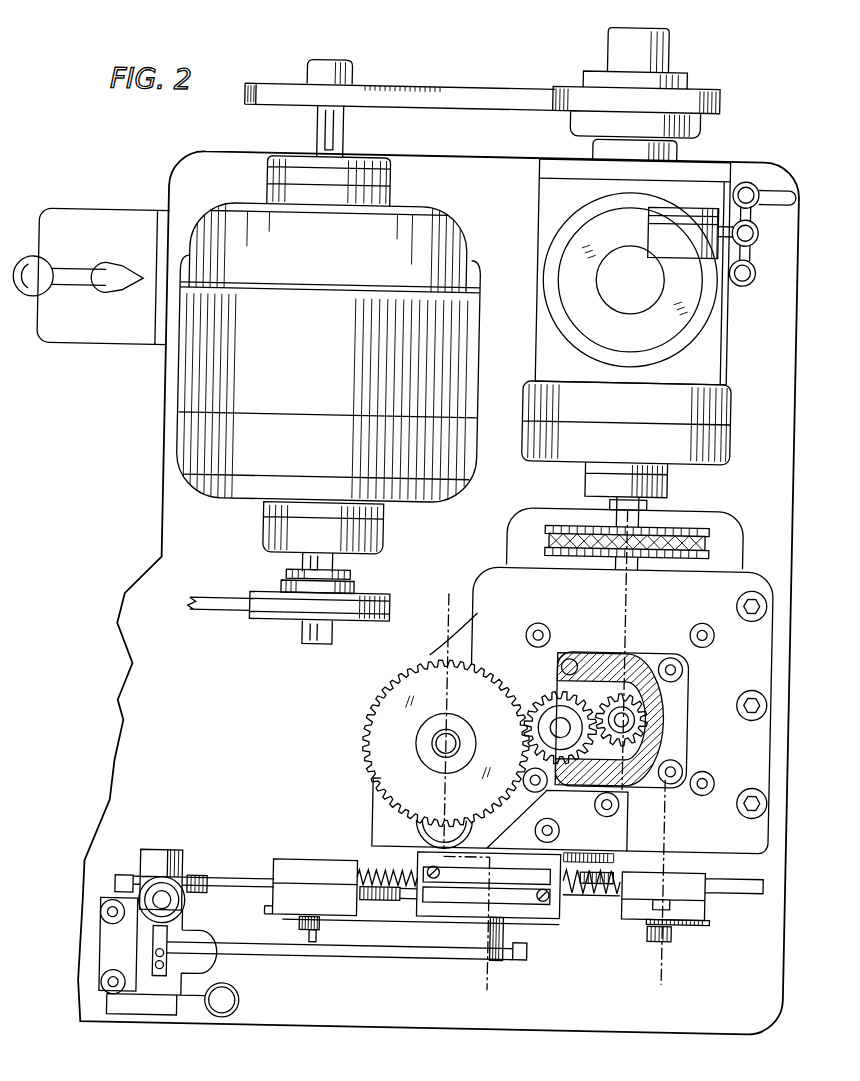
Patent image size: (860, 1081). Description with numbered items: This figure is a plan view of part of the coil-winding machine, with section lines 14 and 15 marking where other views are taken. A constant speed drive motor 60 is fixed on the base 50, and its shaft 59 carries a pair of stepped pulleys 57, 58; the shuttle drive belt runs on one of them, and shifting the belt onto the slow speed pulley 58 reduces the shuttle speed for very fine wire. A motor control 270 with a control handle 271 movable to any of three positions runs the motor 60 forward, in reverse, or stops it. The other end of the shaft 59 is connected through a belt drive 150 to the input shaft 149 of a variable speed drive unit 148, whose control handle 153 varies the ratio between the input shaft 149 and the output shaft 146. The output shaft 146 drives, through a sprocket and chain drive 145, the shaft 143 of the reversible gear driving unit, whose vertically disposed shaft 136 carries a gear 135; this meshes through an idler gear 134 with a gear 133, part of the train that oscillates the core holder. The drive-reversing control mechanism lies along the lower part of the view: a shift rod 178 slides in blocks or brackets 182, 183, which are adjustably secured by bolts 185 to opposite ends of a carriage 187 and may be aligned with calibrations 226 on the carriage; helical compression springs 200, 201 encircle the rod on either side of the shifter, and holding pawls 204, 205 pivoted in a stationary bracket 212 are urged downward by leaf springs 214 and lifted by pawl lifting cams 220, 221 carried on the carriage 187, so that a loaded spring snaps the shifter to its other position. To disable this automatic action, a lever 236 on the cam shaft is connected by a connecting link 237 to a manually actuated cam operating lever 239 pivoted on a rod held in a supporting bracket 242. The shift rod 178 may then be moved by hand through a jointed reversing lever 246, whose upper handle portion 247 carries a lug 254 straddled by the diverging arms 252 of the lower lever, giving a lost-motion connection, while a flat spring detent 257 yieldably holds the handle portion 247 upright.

The section line 14- 14 is at (643, 498).
The section line 15- 15 is at (450, 614).
The base 50 is at (213, 157).
The stepped pulley 57 is at (257, 593).
The slow speed pulley 58 is at (282, 573).
The shaft 59 is at (338, 130).
The constant speed drive motor 60 is at (329, 355).
The gear 133 is at (385, 719).
The idler gear 134 is at (542, 700).
The gear 135 is at (606, 690).
The vertically disposed shaft 136 is at (627, 714).
The shaft 143 is at (603, 559).
The sprocket and chain drive 145 is at (719, 539).
The output shaft 146 is at (608, 499).
The variable speed drive unit 148 is at (697, 354).
The input shaft 149 is at (584, 142).
The belt drive 150 is at (463, 86).
The control handle 153 is at (746, 277).
The slide rod 178 is at (227, 878).
The bracket 182 is at (296, 896).
The bracket 183 is at (699, 901).
The bolt 185 is at (324, 942).
The carriage 187 is at (392, 946).
The helical compression spring 200 is at (381, 869).
The helical compression spring 201 is at (584, 896).
The holding pawl 204 is at (427, 905).
The holding pawl 205 is at (587, 888).
The stationary bracket 212 is at (445, 957).
The leaf springs 214 is at (477, 882).
The pawl lifting cam 220 is at (400, 901).
The pawl lifting cam 221 is at (595, 886).
The calibrations 226 is at (307, 925).
The lever 236 is at (535, 953).
The connecting link 237 is at (291, 955).
The cam operating lever 239 is at (231, 1025).
The supporting bracket 242 is at (150, 956).
The jointed reversing lever 246 is at (126, 864).
The handle portion 247 is at (153, 909).
The diverging arms 252 is at (200, 883).
The lug 254 is at (177, 857).
The flat spring detent 257 is at (160, 938).
The motor control 270 is at (77, 224).
The control handle 271 is at (51, 270).